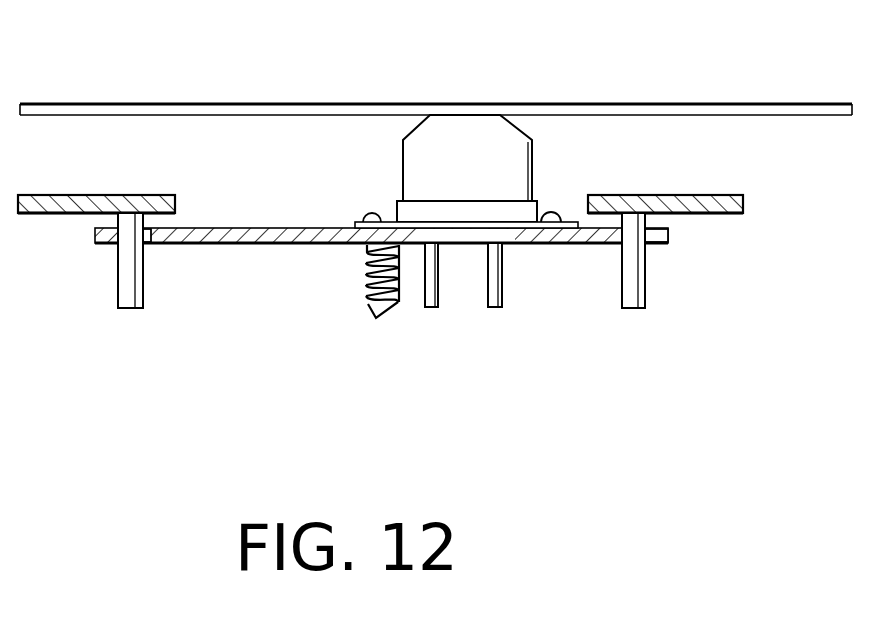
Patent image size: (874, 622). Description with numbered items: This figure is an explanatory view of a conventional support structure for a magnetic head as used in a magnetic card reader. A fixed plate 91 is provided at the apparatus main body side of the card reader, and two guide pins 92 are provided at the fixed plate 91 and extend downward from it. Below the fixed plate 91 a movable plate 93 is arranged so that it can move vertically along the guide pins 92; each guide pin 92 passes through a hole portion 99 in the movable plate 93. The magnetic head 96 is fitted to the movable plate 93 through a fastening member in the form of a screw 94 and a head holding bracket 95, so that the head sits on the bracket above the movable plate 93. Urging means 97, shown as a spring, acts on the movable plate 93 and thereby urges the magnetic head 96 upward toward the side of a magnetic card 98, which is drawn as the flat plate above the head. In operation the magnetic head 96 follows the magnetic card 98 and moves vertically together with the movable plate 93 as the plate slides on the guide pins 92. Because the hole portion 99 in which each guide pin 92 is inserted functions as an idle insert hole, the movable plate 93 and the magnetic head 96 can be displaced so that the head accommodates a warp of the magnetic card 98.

The fixed plate 91 is at (72, 195).
The guide pin 92 is at (118, 287).
The movable plate 93 is at (225, 228).
The screw 94 is at (369, 213).
The head holding bracket 95 is at (498, 213).
The magnetic head 96 is at (433, 140).
The urging means 97 is at (368, 297).
The magnetic card 98 is at (203, 104).
The hole portion 99 is at (143, 247).